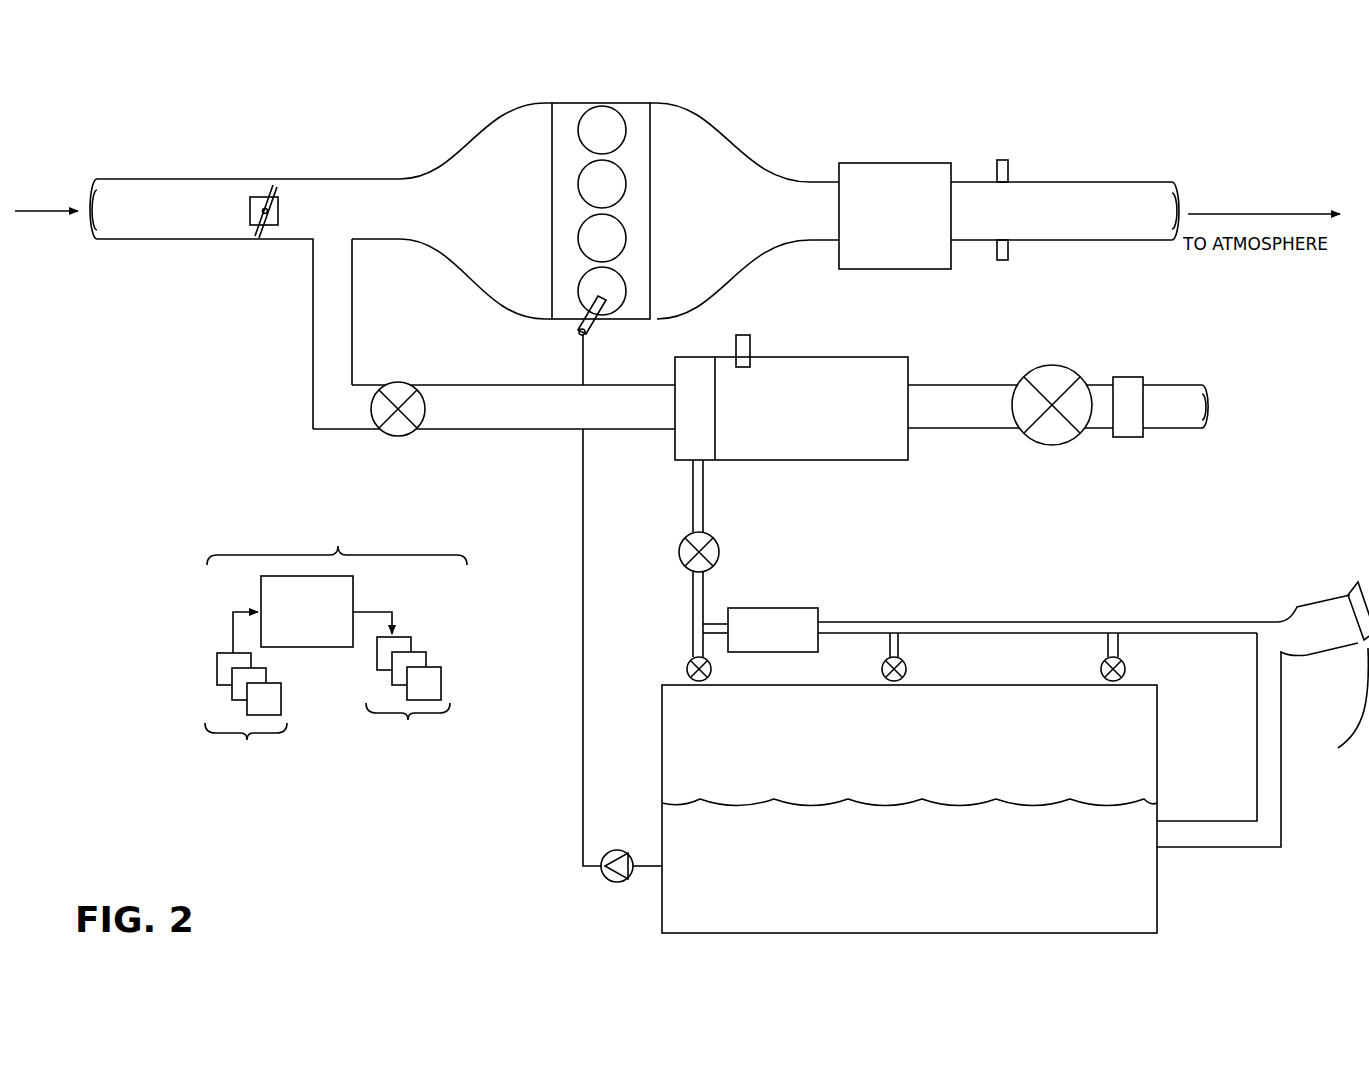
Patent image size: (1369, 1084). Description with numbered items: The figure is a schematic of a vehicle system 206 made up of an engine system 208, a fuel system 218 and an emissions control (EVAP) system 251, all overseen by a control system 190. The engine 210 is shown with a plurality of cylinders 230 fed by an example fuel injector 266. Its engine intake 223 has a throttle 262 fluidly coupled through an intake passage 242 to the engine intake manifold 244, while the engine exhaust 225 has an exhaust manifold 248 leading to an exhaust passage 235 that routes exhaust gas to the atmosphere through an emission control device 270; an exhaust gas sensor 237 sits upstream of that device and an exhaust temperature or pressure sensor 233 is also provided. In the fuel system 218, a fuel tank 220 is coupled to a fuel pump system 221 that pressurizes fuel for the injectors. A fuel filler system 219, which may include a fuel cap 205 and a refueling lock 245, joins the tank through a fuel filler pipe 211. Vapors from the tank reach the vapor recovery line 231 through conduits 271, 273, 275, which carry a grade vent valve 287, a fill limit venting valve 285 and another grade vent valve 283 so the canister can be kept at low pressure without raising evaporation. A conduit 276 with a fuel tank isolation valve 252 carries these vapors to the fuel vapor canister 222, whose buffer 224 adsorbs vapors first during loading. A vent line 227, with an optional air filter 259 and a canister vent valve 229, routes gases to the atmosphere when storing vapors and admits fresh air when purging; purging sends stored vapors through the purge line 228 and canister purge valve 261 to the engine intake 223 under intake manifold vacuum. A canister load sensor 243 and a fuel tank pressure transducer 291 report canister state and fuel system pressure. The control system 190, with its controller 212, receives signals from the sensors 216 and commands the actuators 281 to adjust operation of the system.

The control system 190 is at (337, 533).
The fuel cap 205 is at (1366, 580).
The vehicle system 206 is at (108, 120).
The engine system 208 is at (1052, 130).
The engine 210 is at (652, 196).
The fuel filler pipe 211 is at (1282, 737).
The controller 212 is at (312, 614).
The sensors 216 is at (246, 715).
The fuel system 218 is at (1208, 885).
The fuel filler system 219 is at (1333, 580).
The fuel tank 220 is at (1158, 790).
The fuel pump system 221 is at (618, 851).
The fuel vapor canister 222 is at (908, 368).
The engine intake 223 is at (477, 133).
The buffer 224 is at (688, 357).
The engine exhaust 225 is at (828, 115).
The vent line 227 is at (1058, 406).
The purge line 228 is at (494, 407).
The canister vent valve 229 is at (1048, 366).
The cylinders 230 is at (602, 130).
The vapor recovery line 231 is at (1178, 621).
The exhaust temperature or pressure sensor 233 is at (996, 250).
The exhaust passage 235 is at (1122, 181).
The exhaust gas sensor 237 is at (996, 175).
The intake passage 242 is at (300, 243).
The canister load sensor 243 is at (748, 335).
The engine intake manifold 244 is at (497, 210).
The refueling lock 245 is at (1342, 748).
The exhaust manifold 248 is at (727, 210).
The emissions control system 251 is at (1117, 336).
The fuel tank isolation valve 252 is at (680, 560).
The air filter 259 is at (1128, 377).
The canister purge valve 261 is at (397, 383).
The throttle 262 is at (292, 213).
The fuel injector 266 is at (592, 322).
The emission control device 270 is at (883, 163).
The conduit 271 is at (703, 643).
The conduit 273 is at (888, 645).
The conduit 275 is at (1106, 645).
The conduit 276 is at (690, 495).
The actuators 281 is at (408, 698).
The grade vent valve 283 is at (1143, 657).
The fill limit venting valve 285 is at (906, 669).
The grade vent valve 287 is at (686, 669).
The fuel tank pressure transducer 291 is at (818, 618).